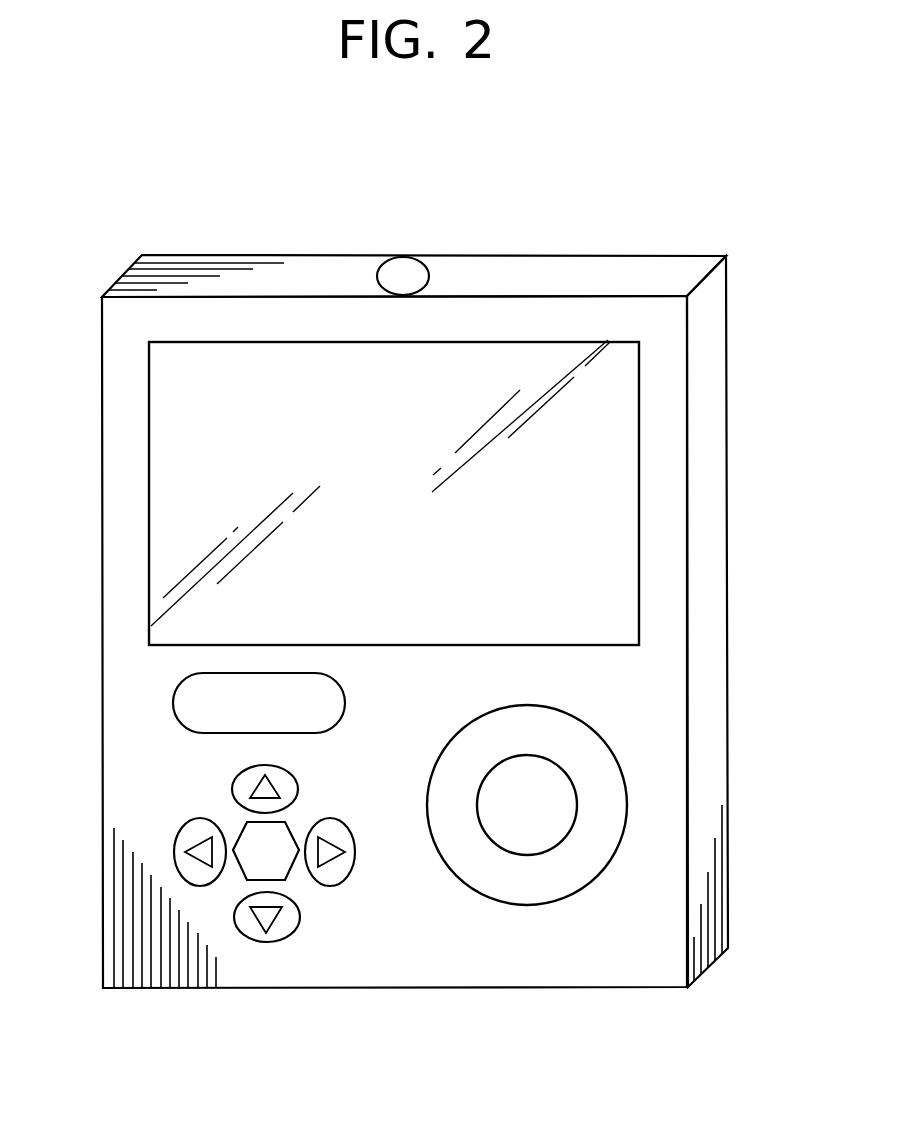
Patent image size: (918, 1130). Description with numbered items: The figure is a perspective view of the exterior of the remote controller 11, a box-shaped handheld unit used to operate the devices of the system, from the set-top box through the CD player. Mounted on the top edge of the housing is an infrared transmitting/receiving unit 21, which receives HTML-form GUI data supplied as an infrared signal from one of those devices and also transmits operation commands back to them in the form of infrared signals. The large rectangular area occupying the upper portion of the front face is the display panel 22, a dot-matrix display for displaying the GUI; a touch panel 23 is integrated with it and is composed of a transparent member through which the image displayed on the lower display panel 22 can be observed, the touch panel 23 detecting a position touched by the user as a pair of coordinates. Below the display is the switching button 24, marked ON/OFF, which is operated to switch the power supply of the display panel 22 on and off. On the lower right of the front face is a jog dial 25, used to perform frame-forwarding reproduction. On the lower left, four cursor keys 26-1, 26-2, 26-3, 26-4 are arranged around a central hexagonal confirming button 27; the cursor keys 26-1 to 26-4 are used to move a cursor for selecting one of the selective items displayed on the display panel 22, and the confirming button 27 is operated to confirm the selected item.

The remote controller 11 is at (647, 272).
The infrared transmitting/receiving unit 21 is at (406, 276).
The display panel 22 is at (640, 417).
The touch panel 23 is at (620, 585).
The switching button 24 is at (173, 710).
The jog dial 25 is at (530, 906).
The cursor key 26-1 is at (298, 788).
The cursor key 26-2 is at (350, 873).
The cursor key 26-3 is at (300, 925).
The cursor key 26-4 is at (183, 827).
The confirming button 27 is at (240, 875).